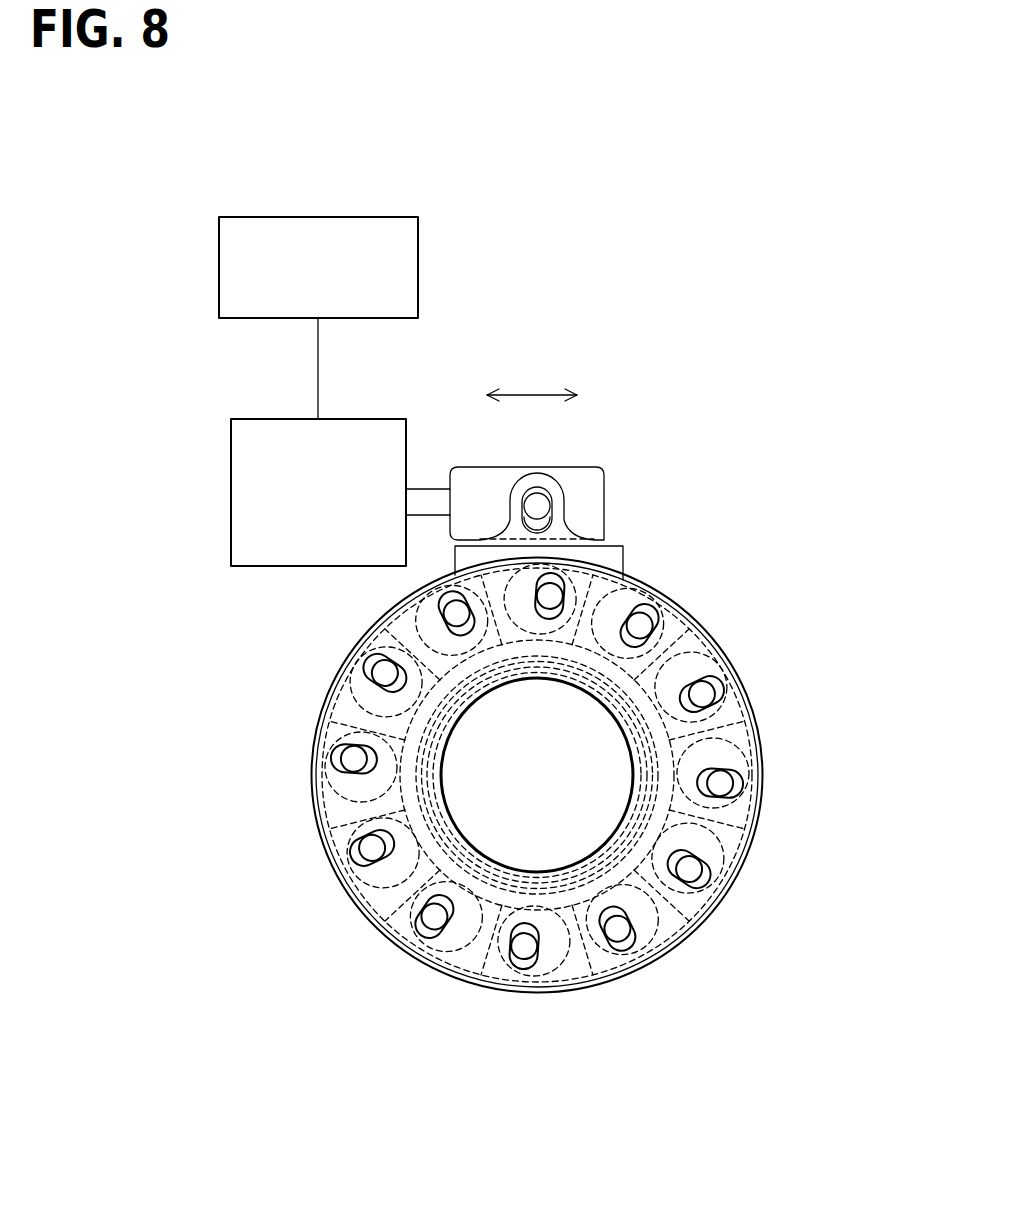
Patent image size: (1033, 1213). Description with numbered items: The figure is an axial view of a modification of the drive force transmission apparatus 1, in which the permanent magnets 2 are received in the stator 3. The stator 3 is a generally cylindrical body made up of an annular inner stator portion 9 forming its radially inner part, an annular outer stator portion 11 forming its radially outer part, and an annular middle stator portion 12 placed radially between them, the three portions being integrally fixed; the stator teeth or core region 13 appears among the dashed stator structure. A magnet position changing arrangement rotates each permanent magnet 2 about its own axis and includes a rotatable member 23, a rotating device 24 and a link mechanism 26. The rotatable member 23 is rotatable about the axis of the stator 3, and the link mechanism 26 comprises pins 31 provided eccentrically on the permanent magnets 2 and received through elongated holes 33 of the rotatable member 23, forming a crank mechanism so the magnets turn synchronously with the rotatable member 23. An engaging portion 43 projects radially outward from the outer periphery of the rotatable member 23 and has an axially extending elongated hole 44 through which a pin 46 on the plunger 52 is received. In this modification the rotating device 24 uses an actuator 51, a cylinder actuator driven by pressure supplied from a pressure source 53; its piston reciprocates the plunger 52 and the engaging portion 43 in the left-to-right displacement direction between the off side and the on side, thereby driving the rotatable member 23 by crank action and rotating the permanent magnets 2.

The drive force transmission apparatus 1 is at (502, 801).
The permanent magnets 2 is at (630, 588).
The stator 3 is at (737, 722).
The inner stator portion 9 is at (752, 855).
The outer stator portion 11 is at (717, 817).
The middle stator portion 12 is at (748, 836).
The teeth 13 is at (690, 640).
The rotatable member 23 is at (695, 925).
The rotating device 24 is at (737, 390).
The link mechanism 26 is at (256, 681).
The pins 31 is at (380, 667).
The elongated holes 33 is at (392, 708).
The engaging portion 43 is at (623, 553).
The elongated hole 44 is at (545, 525).
The pin 46 is at (540, 505).
The actuator 51 is at (231, 492).
The plunger 52 is at (590, 472).
The pressure source 53 is at (420, 234).